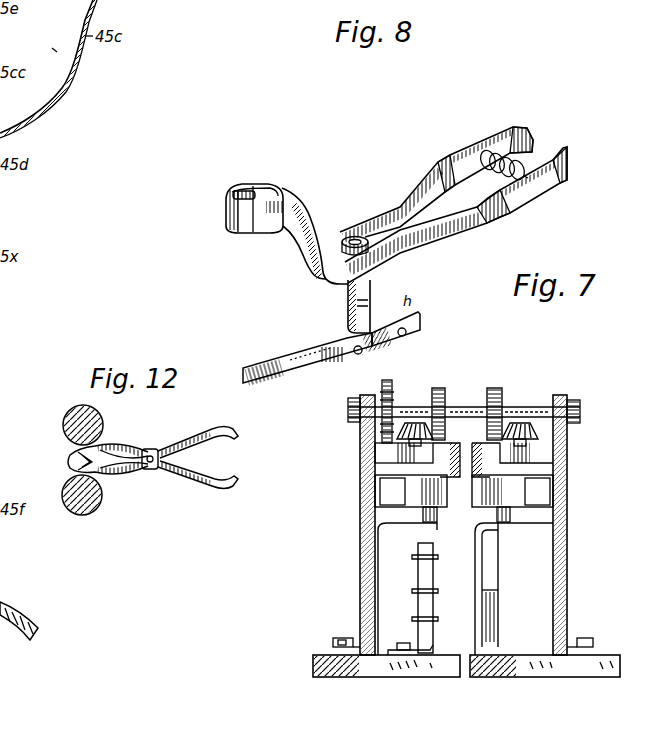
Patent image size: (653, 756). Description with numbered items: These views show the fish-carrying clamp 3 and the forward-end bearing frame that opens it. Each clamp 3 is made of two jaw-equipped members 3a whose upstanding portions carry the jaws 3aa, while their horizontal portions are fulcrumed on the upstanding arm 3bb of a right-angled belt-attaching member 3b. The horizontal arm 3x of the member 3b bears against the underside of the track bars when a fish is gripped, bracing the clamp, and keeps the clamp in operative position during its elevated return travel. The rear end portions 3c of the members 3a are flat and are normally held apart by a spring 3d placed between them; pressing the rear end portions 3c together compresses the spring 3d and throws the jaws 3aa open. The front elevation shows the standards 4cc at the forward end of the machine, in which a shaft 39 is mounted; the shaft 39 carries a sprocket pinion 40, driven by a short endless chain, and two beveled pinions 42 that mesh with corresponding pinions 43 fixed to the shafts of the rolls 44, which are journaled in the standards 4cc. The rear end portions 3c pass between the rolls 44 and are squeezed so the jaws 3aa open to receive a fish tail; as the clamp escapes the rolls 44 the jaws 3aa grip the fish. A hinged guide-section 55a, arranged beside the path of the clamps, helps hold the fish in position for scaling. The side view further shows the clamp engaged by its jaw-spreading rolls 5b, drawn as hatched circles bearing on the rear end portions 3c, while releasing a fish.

In FIG. 8, the fish-carrying clamp 3 is at (355, 230).
In FIG. 12, the fish-carrying clamp 3 is at (124, 473).
In FIG. 8, the jaws 3aa is at (240, 184).
In FIG. 12, the jaws 3aa is at (203, 456).
In FIG. 8, the jaw-equipped member 3a is at (302, 277).
In FIG. 8, the belt-attaching member 3b is at (372, 306).
In FIG. 12, the belt-attaching member 3b is at (152, 470).
In FIG. 8, the upstanding arm 3bb is at (350, 303).
In FIG. 8, the horizontal arm 3x is at (263, 366).
In FIG. 8, the rear end portions 3c is at (535, 137).
In FIG. 12, the rear end portions 3c is at (70, 454).
In FIG. 8, the spring 3d is at (503, 150).
In FIG. 12, the spring 3d is at (76, 460).
In FIG. 7, the shaft 39 is at (466, 407).
In FIG. 7, the sprocket pinion 40 is at (390, 394).
In FIG. 7, the beveled pinions 42 is at (490, 388).
In FIG. 7, the pinions 43 is at (400, 437).
In FIG. 7, the rolls 44 is at (395, 493).
In FIG. 7, the standards 4cc is at (371, 599).
In FIG. 7, the hinged guide-section 55a is at (514, 589).
In FIG. 12, the ball 5b is at (100, 430).